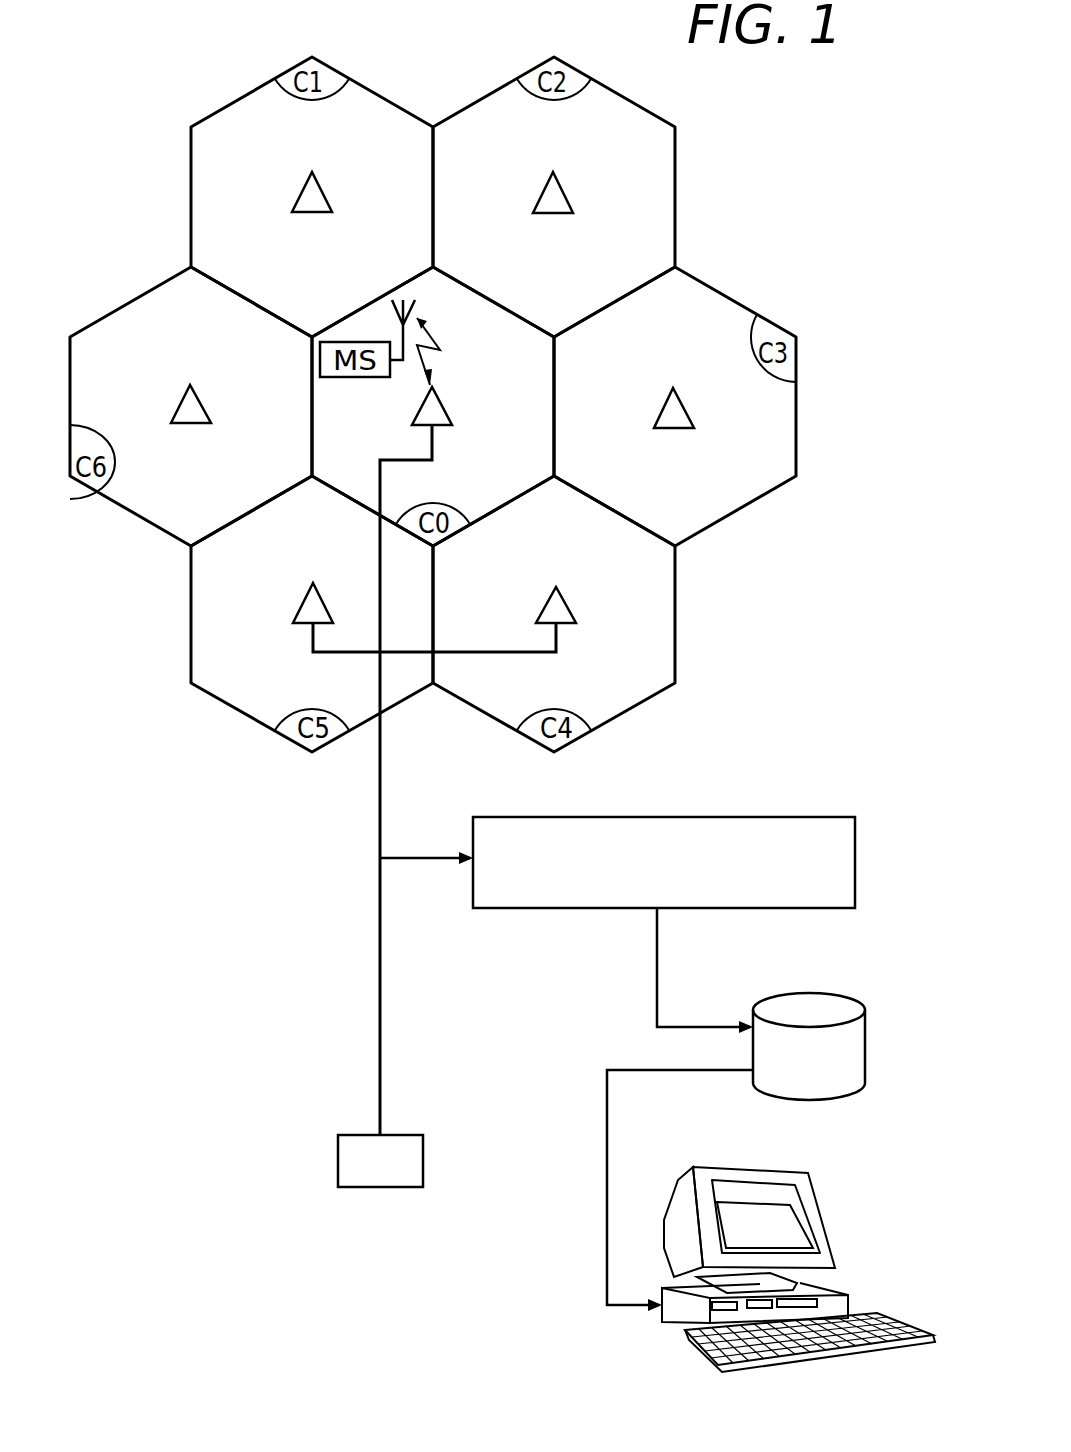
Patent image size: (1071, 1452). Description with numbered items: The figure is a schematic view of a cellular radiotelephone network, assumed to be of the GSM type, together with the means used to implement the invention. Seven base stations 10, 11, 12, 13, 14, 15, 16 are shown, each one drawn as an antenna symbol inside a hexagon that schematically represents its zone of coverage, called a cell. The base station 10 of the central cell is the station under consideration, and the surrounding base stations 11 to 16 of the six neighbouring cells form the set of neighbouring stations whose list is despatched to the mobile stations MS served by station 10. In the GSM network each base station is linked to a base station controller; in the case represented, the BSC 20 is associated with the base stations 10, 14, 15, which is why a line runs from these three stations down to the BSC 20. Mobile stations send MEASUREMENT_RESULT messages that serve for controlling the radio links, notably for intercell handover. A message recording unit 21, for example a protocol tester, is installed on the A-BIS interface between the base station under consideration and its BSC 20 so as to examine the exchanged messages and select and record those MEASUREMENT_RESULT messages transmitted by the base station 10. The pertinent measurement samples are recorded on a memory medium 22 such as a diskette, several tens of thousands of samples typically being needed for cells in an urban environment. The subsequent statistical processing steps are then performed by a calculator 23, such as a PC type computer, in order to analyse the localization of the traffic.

The base station 10 is at (437, 412).
The base station 11 is at (313, 202).
The base station 12 is at (558, 195).
The base station 13 is at (678, 412).
The base station 14 is at (560, 612).
The base station 15 is at (315, 608).
The base station 16 is at (193, 412).
The base station controller 20 is at (340, 1160).
The message recording unit 21 is at (643, 820).
The memory medium 22 is at (850, 1052).
The calculator 23 is at (840, 1293).